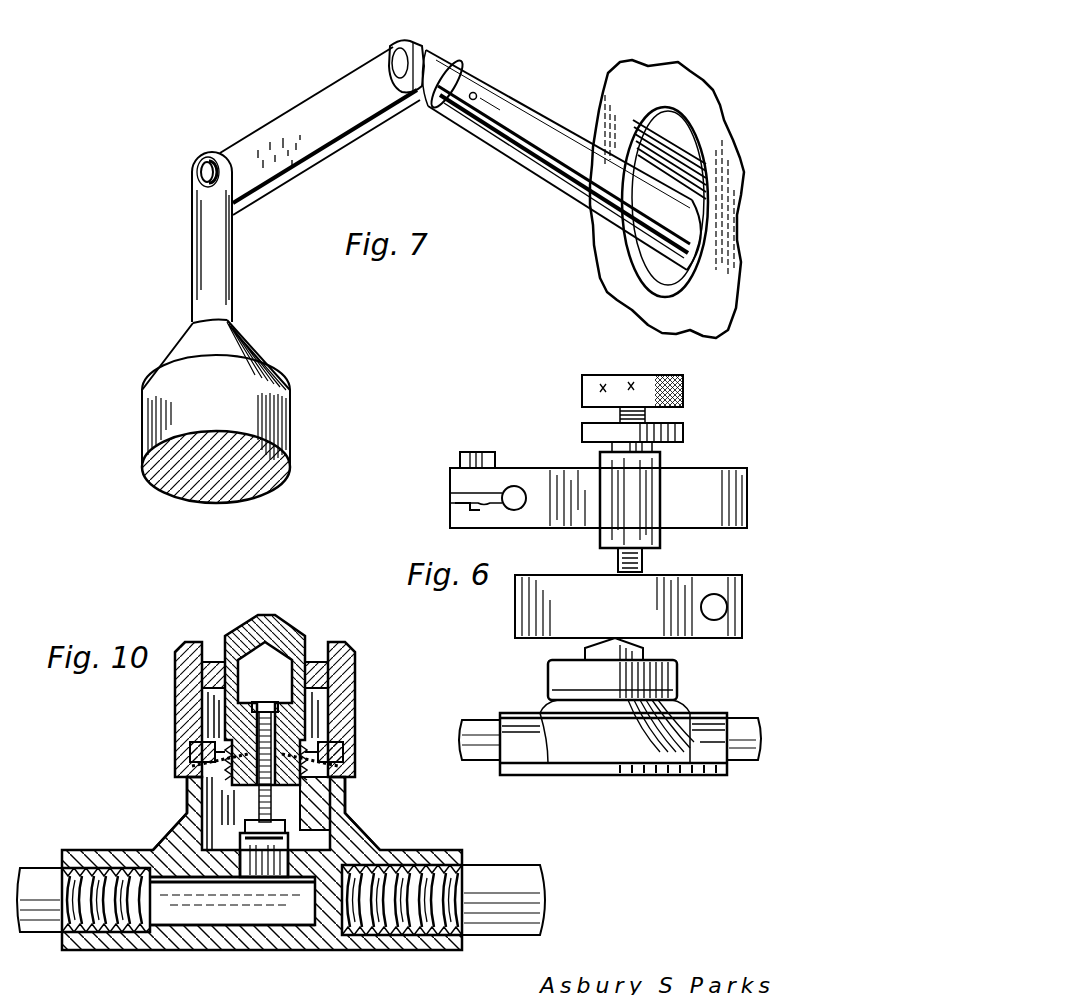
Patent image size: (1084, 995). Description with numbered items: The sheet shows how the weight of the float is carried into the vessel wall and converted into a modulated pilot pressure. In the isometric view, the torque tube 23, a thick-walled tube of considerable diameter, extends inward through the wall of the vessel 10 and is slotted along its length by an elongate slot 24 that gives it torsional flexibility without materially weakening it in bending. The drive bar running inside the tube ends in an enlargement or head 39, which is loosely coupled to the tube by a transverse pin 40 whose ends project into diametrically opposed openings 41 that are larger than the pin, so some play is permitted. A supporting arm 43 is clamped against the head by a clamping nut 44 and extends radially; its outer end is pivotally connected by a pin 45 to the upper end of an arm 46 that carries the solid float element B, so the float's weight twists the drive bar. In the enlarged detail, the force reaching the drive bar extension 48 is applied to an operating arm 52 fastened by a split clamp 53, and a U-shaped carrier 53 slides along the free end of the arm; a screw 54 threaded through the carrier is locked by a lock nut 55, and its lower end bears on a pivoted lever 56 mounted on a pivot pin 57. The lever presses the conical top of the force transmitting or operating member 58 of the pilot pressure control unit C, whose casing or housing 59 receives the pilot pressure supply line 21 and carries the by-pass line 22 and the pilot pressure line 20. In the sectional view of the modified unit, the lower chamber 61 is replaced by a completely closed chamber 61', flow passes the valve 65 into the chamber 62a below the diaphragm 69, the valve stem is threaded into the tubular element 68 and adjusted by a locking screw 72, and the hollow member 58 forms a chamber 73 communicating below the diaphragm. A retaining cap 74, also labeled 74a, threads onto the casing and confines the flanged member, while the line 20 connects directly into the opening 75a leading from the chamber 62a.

In FIG. 7, the vessel 10 is at (607, 255).
In FIG. 7, the torque tube 23 is at (522, 118).
In FIG. 7, the elongate slot 24 is at (510, 162).
In FIG. 7, the enlargement or head 39 is at (432, 110).
In FIG. 7, the transverse pin 40 is at (477, 93).
In FIG. 7, the openings 41 is at (490, 98).
In FIG. 7, the supporting arm 43 is at (318, 108).
In FIG. 7, the clamping nut 44 is at (407, 46).
In FIG. 7, the pin 45 is at (198, 172).
In FIG. 7, the arm 46 is at (232, 272).
In FIG. 7, the float element B is at (258, 352).
In FIG. 6, the extension of the drive bar 48 is at (516, 487).
In FIG. 6, the operating arm 52 is at (703, 482).
In FIG. 6, the U-shaped carrier 53 is at (455, 508).
In FIG. 6, the screw 54 is at (685, 393).
In FIG. 6, the lock nut 55 is at (686, 434).
In FIG. 6, the pivoted lever 56 is at (520, 618).
In FIG. 6, the pivot pin 57 is at (722, 607).
In FIG. 6, the force transmitting or operating member 58 is at (607, 660).
In FIG. 10, the force transmitting or operating member 58 is at (258, 622).
In FIG. 6, the pilot pressure control unit C is at (706, 715).
In FIG. 10, the pilot pressure control unit C is at (190, 792).
In FIG. 6, the pilot pressure supply line 21 is at (490, 728).
In FIG. 10, the pilot pressure supply line 21 is at (40, 870).
In FIG. 6, the by-pass line 22 is at (743, 762).
In FIG. 10, the pilot pressure line 20 is at (503, 928).
In FIG. 10, the casing or housing 59 is at (350, 832).
In FIG. 10, the chamber 61 is at (271, 834).
In FIG. 10, the completely closed chamber 61' is at (232, 933).
In FIG. 10, the chamber 62a is at (300, 802).
In FIG. 10, the valve 65 is at (215, 838).
In FIG. 10, the tubular element 68 is at (300, 702).
In FIG. 10, the diaphragm 69 is at (340, 750).
In FIG. 10, the locking screw 72 is at (262, 700).
In FIG. 10, the chamber 73 is at (235, 704).
In FIG. 10, the retaining cap 74 is at (200, 648).
In FIG. 10, the nut flange 74a is at (326, 648).
In FIG. 10, the opening 75a is at (410, 875).